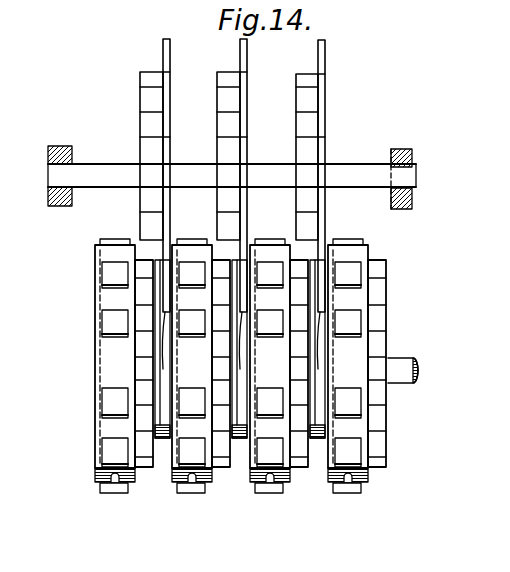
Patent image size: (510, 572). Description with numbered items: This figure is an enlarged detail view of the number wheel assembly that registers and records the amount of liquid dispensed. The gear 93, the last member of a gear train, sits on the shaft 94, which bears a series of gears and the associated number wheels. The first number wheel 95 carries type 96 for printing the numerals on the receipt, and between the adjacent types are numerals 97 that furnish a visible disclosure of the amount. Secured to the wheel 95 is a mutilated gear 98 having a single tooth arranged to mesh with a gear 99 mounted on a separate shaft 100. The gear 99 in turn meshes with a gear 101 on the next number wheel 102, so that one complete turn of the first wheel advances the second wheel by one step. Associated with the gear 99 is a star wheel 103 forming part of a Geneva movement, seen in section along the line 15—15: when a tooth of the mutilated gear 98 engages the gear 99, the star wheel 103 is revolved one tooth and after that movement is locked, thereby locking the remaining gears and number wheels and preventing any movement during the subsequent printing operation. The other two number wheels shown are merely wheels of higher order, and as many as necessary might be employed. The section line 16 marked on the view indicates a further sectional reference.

The section line 15— 15 is at (135, 88).
The section line 16- 16 is at (100, 239).
The gear 93 is at (375, 423).
The shaft 94 is at (418, 368).
The first number wheel 95 is at (408, 488).
The type 96 is at (343, 467).
The numerals 97 is at (117, 363).
The mutilated gear 98 is at (322, 446).
The gear 99 is at (305, 97).
The shaft 100 is at (360, 175).
The gear 101 is at (305, 474).
The number wheel 102 is at (250, 479).
The star wheel 103 is at (327, 118).